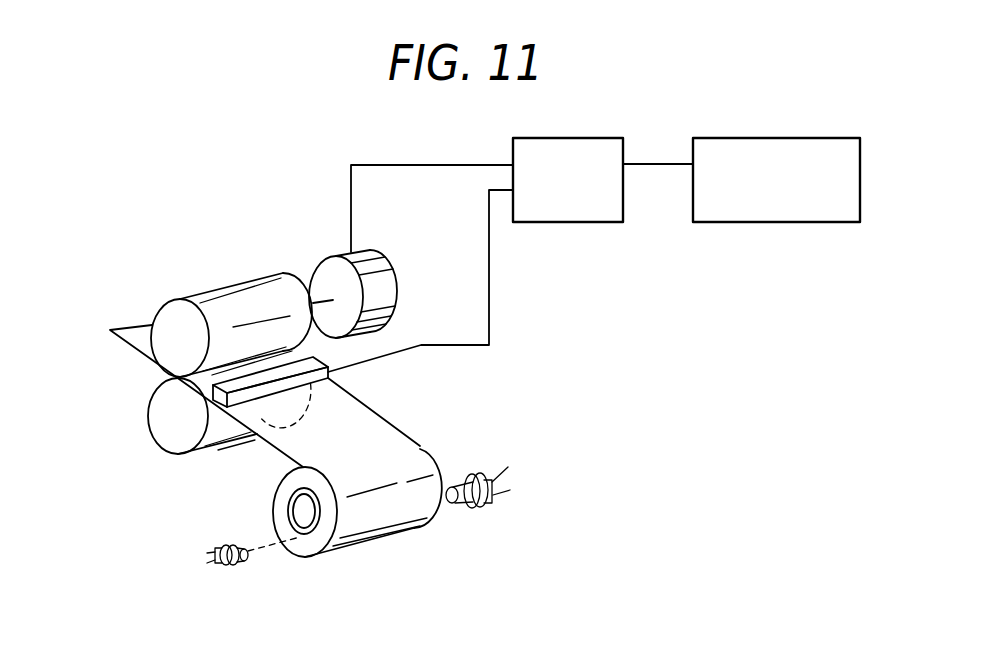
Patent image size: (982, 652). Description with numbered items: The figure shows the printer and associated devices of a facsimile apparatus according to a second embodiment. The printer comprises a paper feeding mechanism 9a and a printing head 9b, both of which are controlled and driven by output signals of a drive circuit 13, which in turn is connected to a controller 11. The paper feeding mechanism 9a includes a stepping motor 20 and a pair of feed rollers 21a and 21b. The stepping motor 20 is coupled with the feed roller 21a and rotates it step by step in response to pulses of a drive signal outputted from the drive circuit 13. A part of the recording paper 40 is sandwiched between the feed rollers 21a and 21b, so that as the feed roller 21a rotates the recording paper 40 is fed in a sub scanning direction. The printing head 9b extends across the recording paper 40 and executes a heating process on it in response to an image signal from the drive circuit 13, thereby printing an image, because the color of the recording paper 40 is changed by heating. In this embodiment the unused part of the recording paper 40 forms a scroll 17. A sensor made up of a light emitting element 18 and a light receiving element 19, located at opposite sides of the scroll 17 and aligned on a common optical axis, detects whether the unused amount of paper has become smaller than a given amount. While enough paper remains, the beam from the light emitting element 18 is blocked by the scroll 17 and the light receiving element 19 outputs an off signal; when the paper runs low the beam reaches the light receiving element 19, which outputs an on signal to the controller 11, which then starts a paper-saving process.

The paper feeding mechanism 9a is at (299, 252).
The printing head 9b is at (332, 373).
The controller 11 is at (813, 137).
The drive circuit 13 is at (580, 137).
The scroll 17 is at (280, 493).
The light emitting element 18 is at (242, 563).
The light receiving element 19 is at (485, 505).
The stepping motor 20 is at (383, 273).
The feed roller 21a is at (235, 282).
The feed roller 21b is at (163, 435).
The recording paper 40 is at (135, 347).